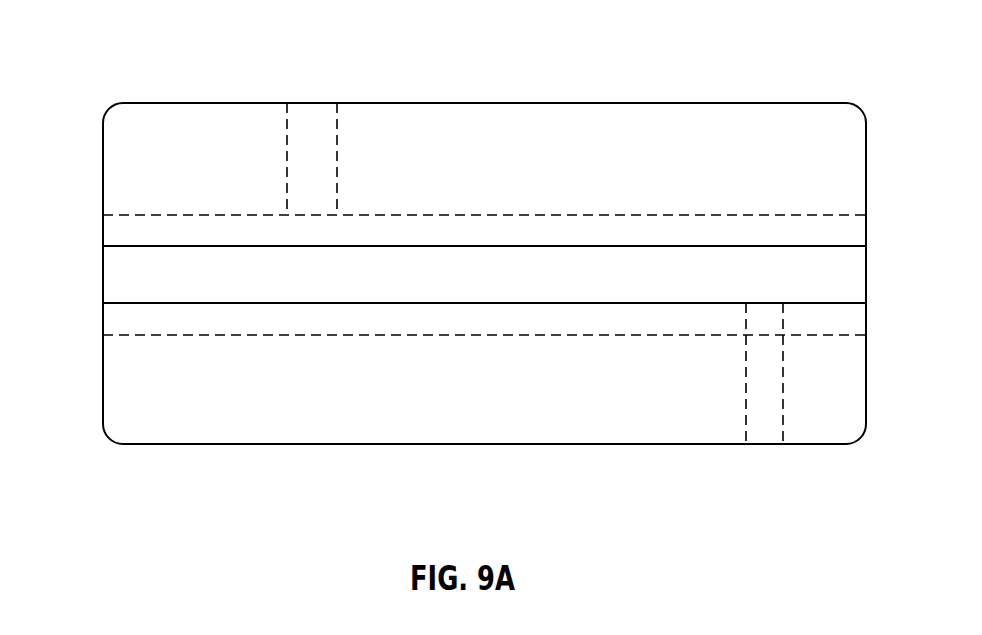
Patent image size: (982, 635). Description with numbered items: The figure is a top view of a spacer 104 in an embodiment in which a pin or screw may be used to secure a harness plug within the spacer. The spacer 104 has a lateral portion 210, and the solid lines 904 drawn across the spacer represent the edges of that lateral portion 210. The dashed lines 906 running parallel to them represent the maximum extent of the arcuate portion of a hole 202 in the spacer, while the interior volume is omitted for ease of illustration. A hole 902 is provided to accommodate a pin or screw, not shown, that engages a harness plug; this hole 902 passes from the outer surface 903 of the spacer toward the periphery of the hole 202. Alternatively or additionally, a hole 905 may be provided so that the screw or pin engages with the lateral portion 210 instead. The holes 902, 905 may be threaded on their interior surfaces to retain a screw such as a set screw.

The spacer 104 is at (157, 41).
The hole 202 is at (99, 275).
The lateral portion 210 is at (128, 290).
The hole 902 is at (298, 128).
The outer surface 903 is at (407, 424).
The solid lines 904 is at (573, 244).
The hole 905 is at (775, 417).
The dashed lines 906 is at (666, 214).